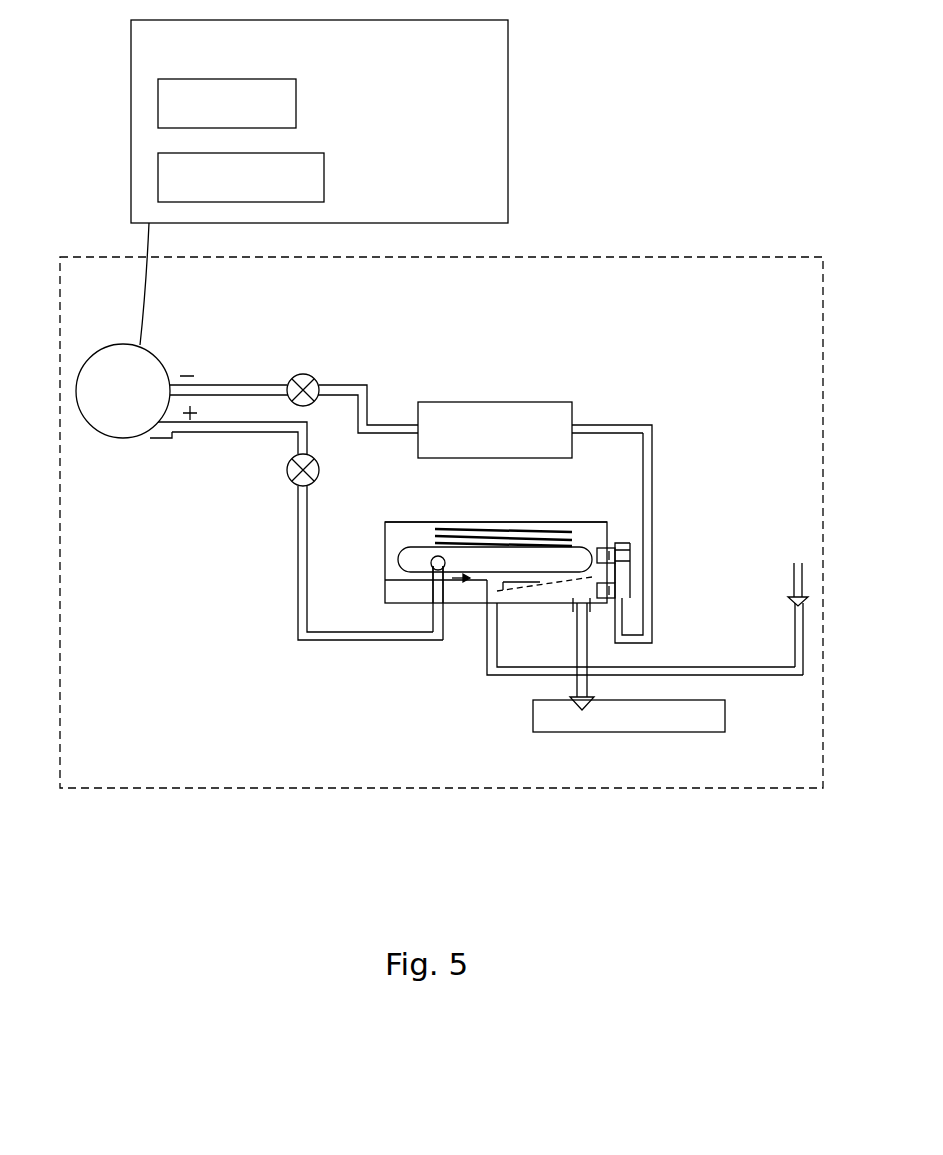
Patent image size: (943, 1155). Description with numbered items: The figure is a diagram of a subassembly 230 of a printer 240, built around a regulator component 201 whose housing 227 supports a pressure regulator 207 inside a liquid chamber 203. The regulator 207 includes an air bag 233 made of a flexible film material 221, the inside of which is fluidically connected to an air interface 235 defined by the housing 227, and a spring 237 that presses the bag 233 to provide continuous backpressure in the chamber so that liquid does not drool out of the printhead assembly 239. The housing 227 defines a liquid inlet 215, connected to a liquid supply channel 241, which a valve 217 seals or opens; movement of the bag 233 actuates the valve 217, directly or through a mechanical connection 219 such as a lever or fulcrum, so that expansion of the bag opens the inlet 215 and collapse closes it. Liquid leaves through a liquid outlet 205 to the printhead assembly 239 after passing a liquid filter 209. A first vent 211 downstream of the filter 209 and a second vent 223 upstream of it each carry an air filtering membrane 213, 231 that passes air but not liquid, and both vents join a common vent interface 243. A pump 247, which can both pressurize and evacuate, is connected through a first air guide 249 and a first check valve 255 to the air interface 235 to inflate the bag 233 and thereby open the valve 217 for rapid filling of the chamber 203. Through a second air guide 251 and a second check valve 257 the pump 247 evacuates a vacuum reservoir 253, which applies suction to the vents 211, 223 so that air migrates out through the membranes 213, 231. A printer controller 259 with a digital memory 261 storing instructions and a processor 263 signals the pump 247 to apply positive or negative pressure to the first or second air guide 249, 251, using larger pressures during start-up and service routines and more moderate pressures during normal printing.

The regulator component 201 is at (552, 510).
The liquid chamber 203 is at (617, 556).
The liquid outlet 205 is at (573, 604).
The pressure regulator 207 is at (420, 538).
The liquid filter 209 is at (537, 589).
The first vent 211 is at (627, 601).
The air filtering membrane 213 is at (613, 586).
The liquid inlet 215 is at (490, 581).
The valve 217 is at (503, 578).
The mechanical connection 219 is at (440, 581).
The flexible film material 221 is at (398, 556).
The second vent 223 is at (625, 552).
The housing 227 is at (430, 587).
The subassembly 230 is at (396, 368).
The air filtering membrane 231 is at (627, 562).
The air bag 233 is at (431, 563).
The air interface 235 is at (443, 582).
The spring 237 is at (568, 534).
The printhead assembly 239 is at (637, 715).
The printer 240 is at (600, 257).
The liquid supply channel 241 is at (755, 676).
The common vent interface 243 is at (621, 574).
The pump 247 is at (152, 405).
The first air guide 249 is at (208, 432).
The second air guide 251 is at (605, 427).
The vacuum reservoir 253 is at (500, 410).
The first check valve 255 is at (287, 473).
The second check valve 257 is at (300, 375).
The printer controller 259 is at (508, 142).
The digital memory 261 is at (158, 99).
The processor 263 is at (158, 173).